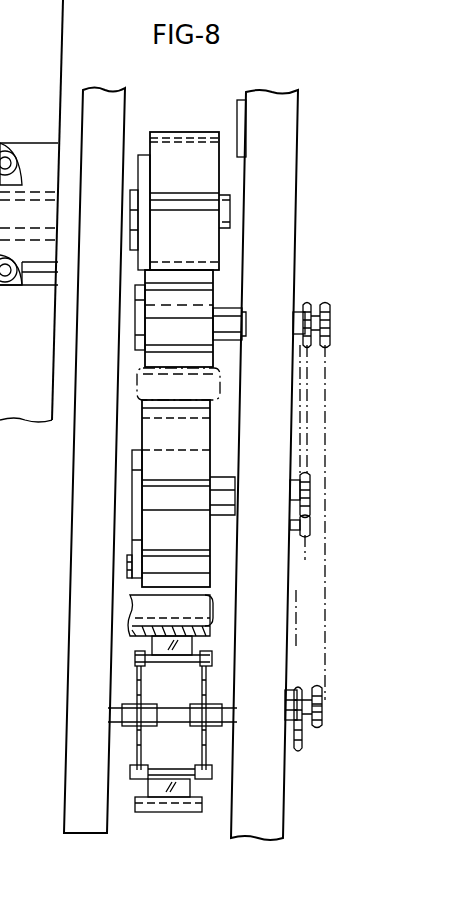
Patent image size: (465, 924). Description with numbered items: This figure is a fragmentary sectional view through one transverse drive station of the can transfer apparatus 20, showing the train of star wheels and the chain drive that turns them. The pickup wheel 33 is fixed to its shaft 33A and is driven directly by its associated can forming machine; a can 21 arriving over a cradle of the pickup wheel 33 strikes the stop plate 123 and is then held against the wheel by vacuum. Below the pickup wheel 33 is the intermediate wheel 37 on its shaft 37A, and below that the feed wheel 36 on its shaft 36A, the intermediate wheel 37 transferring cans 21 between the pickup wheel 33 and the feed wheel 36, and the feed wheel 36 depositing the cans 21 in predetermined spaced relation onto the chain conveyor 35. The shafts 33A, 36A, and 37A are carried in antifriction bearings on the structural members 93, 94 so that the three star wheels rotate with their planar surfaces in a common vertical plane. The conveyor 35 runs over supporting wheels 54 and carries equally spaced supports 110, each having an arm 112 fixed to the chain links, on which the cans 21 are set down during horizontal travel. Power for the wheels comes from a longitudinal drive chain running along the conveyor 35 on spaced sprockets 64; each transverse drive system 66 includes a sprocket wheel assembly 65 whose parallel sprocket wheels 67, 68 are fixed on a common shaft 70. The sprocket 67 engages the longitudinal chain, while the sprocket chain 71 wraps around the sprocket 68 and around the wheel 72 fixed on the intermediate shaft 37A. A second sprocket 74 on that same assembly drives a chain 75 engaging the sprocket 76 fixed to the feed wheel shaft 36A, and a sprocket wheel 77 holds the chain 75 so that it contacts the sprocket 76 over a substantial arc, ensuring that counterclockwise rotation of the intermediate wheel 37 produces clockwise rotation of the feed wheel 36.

The transfer apparatus 20 is at (318, 88).
The metal can 21 is at (145, 383).
The pickup wheel 33 is at (181, 155).
The pickup wheel shaft 33A is at (222, 215).
The chain conveyor 35 is at (135, 655).
The feed wheel 36 is at (148, 545).
The feed wheel shaft 36A is at (128, 490).
The intermediate wheel 37 is at (200, 302).
The intermediate wheel shaft 37A is at (230, 340).
The supporting wheels 54 is at (200, 688).
The sprocket 64 is at (300, 750).
The sprocket wheel assembly 65 is at (301, 684).
The transverse chain drive system 66 is at (316, 274).
The sprocket wheel 67 is at (296, 693).
The sprocket wheel 68 is at (318, 688).
The common shaft 70 is at (285, 708).
The sprocket chain 71 is at (318, 590).
The sprocket wheel 72 is at (320, 312).
The sprocket 74 is at (306, 300).
The chain 75 is at (303, 410).
The sprocket 76 is at (300, 480).
The sprocket wheel 77 is at (303, 528).
The structural member 93 is at (253, 835).
The structural member 94 is at (77, 825).
The support 110 is at (163, 812).
The arm 112 is at (181, 790).
The stop plate 123 is at (241, 100).